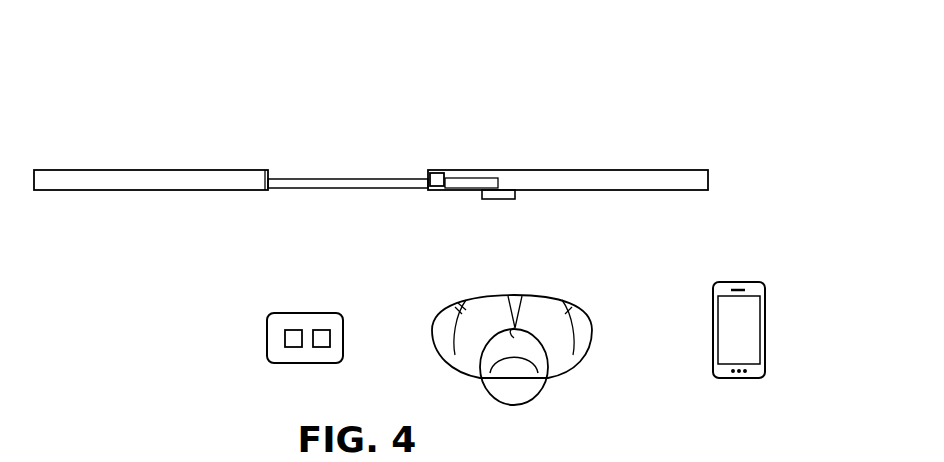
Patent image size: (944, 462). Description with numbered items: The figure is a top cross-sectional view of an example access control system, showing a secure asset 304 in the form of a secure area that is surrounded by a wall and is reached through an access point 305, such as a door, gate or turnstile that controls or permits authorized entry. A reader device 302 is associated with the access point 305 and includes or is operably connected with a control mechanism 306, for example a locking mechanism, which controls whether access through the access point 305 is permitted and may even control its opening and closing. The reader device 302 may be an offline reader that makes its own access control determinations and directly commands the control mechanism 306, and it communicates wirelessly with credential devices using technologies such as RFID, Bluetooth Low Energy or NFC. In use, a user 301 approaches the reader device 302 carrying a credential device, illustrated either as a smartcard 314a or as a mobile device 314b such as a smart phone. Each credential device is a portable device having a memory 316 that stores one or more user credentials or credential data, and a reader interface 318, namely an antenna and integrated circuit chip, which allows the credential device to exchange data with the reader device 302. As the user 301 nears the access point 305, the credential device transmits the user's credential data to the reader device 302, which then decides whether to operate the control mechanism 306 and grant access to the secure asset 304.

The secure asset 304 is at (331, 63).
The access point 305 is at (352, 192).
The reader device 302 is at (501, 200).
The control mechanism 306 is at (437, 171).
The user 301 is at (572, 310).
The smartcard 314a is at (268, 338).
The mobile device 314b is at (713, 330).
The memory 316 is at (293, 345).
The reader interface 318 is at (330, 332).